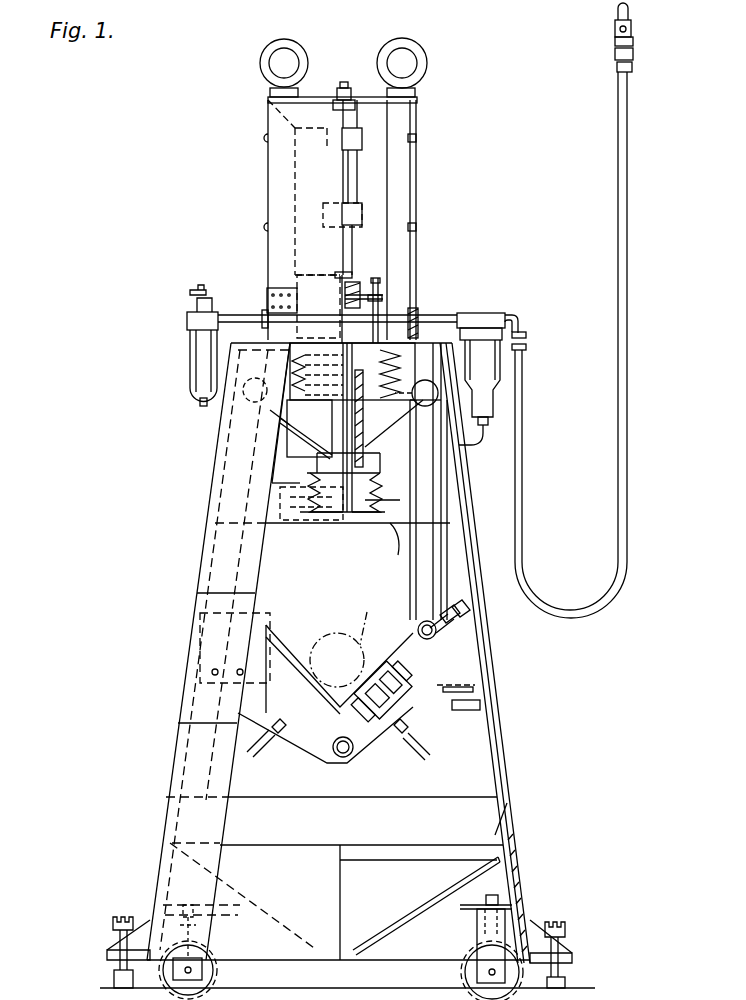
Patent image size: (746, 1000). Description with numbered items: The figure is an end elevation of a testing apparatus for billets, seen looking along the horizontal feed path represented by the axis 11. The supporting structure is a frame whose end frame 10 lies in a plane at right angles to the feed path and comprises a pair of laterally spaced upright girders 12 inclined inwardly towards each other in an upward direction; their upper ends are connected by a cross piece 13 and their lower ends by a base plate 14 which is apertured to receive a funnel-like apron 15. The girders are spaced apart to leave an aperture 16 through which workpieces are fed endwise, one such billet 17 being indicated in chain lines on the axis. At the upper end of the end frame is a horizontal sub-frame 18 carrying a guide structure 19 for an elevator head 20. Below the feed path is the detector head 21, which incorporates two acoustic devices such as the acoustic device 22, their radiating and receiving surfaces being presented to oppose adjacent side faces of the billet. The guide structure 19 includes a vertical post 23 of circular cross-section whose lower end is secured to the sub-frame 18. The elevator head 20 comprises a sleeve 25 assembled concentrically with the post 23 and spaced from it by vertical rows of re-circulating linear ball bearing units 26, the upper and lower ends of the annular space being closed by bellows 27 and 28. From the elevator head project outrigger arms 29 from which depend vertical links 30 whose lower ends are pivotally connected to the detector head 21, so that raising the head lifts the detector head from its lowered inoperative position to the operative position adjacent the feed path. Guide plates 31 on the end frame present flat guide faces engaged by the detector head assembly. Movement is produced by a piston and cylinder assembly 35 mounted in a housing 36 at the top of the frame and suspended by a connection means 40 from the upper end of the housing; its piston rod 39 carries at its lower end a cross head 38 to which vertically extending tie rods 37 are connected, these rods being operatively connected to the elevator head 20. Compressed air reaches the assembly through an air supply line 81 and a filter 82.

The end frame 10 is at (515, 740).
The axis 11 is at (337, 658).
The upright girder 12 is at (188, 762).
The cross piece 13 is at (273, 498).
The base plate 14 is at (512, 884).
The funnel-like apron 15 is at (405, 918).
The aperture 16 is at (320, 521).
The billet 17 is at (369, 617).
The horizontal sub-frame 18 is at (427, 488).
The guide structure 19 is at (320, 458).
The elevator head 20 is at (418, 384).
The detector head 21 is at (298, 757).
The acoustic device 22 is at (375, 735).
The vertical post 23 is at (381, 528).
The sleeve 25 is at (364, 432).
The linear ball bearing unit 26 is at (362, 478).
The bellows 27 is at (388, 382).
The bellows 28 is at (412, 548).
The outrigger arm 29 is at (277, 418).
The vertical link 30 is at (263, 578).
The guide plate 31 is at (470, 668).
The piston and cylinder assembly 35 is at (358, 178).
The housing 36 is at (412, 190).
The tie rod 37 is at (300, 275).
The cross head 38 is at (360, 280).
The piston rod 39 is at (352, 262).
The connection means 40 is at (342, 88).
The air supply line 81 is at (523, 493).
The filter 82 is at (480, 332).